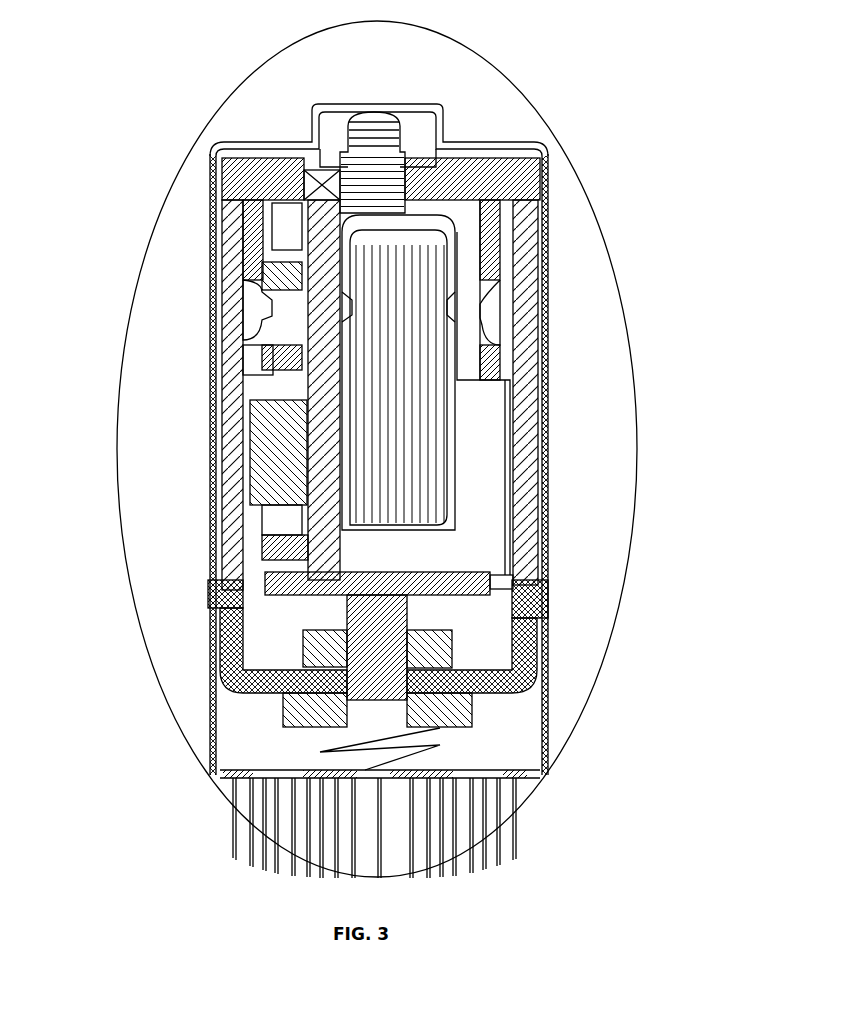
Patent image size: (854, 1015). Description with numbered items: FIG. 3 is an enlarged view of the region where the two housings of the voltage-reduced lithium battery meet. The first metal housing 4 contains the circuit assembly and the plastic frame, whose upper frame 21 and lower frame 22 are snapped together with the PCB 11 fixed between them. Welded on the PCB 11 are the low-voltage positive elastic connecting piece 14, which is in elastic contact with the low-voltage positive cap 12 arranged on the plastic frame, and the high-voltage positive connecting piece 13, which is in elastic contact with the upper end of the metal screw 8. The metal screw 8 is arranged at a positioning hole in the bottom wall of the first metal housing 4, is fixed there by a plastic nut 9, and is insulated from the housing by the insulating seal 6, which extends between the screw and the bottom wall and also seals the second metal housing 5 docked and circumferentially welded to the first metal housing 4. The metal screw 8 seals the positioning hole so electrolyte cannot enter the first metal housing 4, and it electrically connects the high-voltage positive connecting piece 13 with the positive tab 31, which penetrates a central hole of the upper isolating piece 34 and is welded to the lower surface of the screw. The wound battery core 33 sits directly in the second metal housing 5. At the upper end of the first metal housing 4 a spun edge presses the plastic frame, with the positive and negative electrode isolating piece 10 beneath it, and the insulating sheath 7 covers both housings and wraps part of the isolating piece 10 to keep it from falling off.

The insulating sheath 7 is at (548, 462).
The positive and negative electrode isolating piece 10 is at (253, 147).
The low-voltage positive cap 12 is at (431, 104).
The low-voltage positive elastic connecting piece 14 is at (400, 133).
The upper frame 21 is at (215, 212).
The lower frame 22 is at (215, 322).
The printed circuit board (PCB) 11 is at (215, 362).
The high-voltage positive connecting piece 13 is at (343, 600).
The first metal housing 4 is at (238, 588).
The insulating seal 6 is at (548, 614).
The second metal housing 5 is at (212, 702).
The plastic nut 9 is at (450, 652).
The metal screw 8 is at (470, 715).
The positive tab 31 is at (445, 742).
The upper isolating piece 34 is at (400, 777).
The wound battery core 33 is at (380, 742).